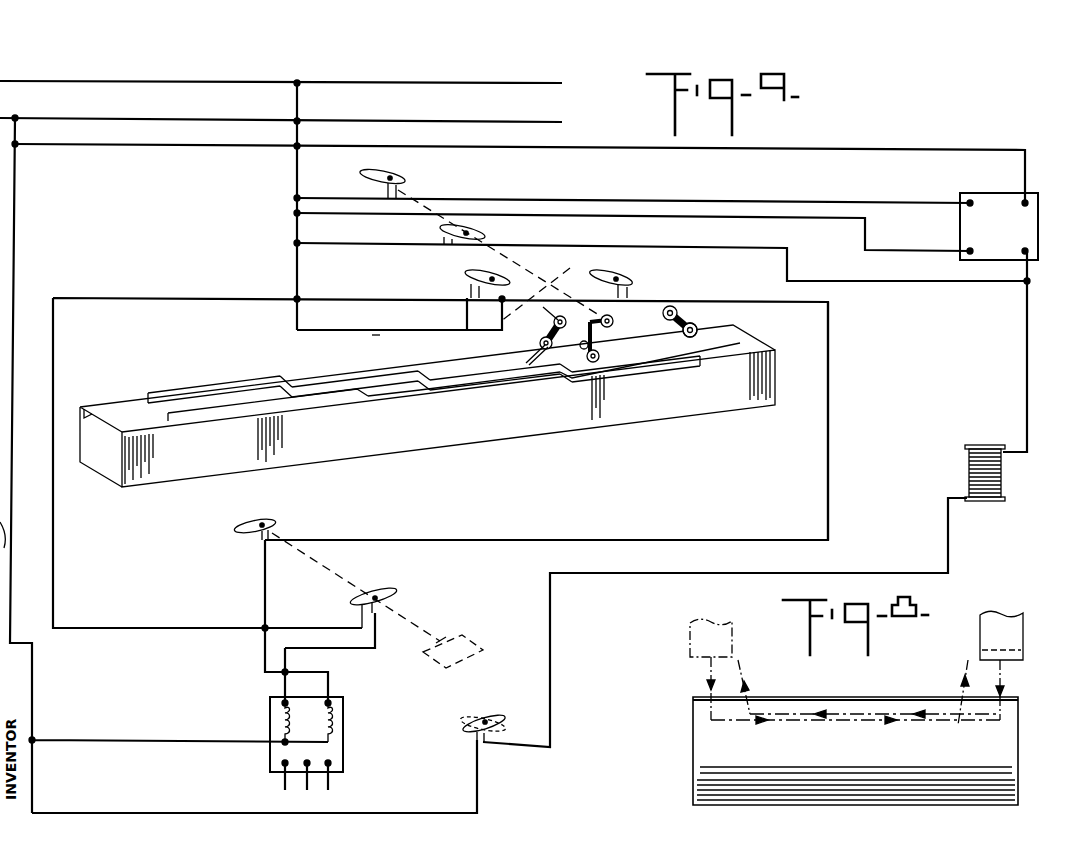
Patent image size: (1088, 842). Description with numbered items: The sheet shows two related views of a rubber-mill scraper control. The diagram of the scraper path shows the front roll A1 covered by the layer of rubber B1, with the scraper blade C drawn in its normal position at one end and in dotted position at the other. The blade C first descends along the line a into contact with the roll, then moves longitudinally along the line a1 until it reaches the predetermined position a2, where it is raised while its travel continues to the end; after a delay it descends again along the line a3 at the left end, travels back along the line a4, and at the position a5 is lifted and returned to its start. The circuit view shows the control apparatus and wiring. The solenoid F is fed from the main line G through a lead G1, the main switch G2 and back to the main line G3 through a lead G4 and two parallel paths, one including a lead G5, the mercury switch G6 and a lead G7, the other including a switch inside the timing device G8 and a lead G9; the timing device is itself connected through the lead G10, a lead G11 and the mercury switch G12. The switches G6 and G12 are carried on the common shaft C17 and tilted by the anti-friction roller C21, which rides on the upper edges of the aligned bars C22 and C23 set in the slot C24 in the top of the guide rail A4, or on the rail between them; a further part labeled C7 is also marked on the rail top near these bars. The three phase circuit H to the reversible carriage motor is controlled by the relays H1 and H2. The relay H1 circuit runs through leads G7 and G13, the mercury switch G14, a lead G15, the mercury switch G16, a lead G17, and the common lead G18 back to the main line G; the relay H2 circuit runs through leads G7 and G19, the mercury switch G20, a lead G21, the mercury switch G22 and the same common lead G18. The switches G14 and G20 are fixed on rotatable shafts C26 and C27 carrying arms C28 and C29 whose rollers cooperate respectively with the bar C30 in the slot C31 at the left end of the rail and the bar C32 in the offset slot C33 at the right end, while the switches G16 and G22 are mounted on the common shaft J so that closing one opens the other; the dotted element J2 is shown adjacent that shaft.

In FIG. 9, the main line G3 is at (136, 83).
In FIG. 9, the main line G is at (136, 121).
In FIG. 9, the lead G10 is at (838, 148).
In FIG. 9, the lead G7 is at (294, 176).
In FIG. 9, the lead G11 is at (570, 195).
In FIG. 9, the lead G9 is at (610, 220).
In FIG. 9, the lead G5 is at (716, 230).
In FIG. 9, the lead G4 is at (1022, 350).
In FIG. 9, the timing device G8 is at (1040, 224).
In FIG. 9, the lead G21 is at (180, 286).
In FIG. 9, the lead G15 is at (830, 406).
In FIG. 9, the lead G19 is at (399, 314).
In FIG. 9, the common lead G18 is at (136, 728).
In FIG. 9, the lead G1 is at (144, 822).
In FIG. 9, the lead G17 is at (264, 572).
In FIG. 9, the solenoid F is at (966, 465).
In FIG. 9, the tiltable mercury switch G12 is at (398, 178).
In FIG. 9, the tiltable mercury switch G6 is at (440, 233).
In FIG. 9, the mercury switch G20 is at (465, 278).
In FIG. 9, the mercury switch G14 is at (636, 280).
In FIG. 9, the mercury switch G16 is at (262, 515).
In FIG. 9, the mercury switch G22 is at (392, 590).
In FIG. 9, the main switch G2 is at (492, 718).
In FIG. 9, the lead G13 is at (546, 286).
In FIG. 9, the common shaft C17 is at (517, 262).
In FIG. 9, the common shaft J is at (410, 616).
In FIG. 9, the latch J2 is at (482, 652).
In FIG. 9, the three phase circuit H is at (343, 775).
In FIG. 9, the relay H2 is at (282, 728).
In FIG. 9, the relay H1 is at (342, 728).
In FIG. 9, the guide rail A4 is at (404, 444).
In FIG. 9, the bar C30 is at (155, 394).
In FIG. 9, the slot C31 is at (300, 380).
In FIG. 9, the slot C33 is at (445, 372).
In FIG. 9, the rotatable shaft C27 is at (593, 358).
In FIG. 9, the carriage part C7 is at (380, 335).
In FIG. 9, the bar C23 is at (204, 420).
In FIG. 9, the slot C24 is at (410, 396).
In FIG. 9, the bar C22 is at (540, 372).
In FIG. 9, the bar C32 is at (660, 343).
In FIG. 9, the arm C29 is at (555, 322).
In FIG. 9, the anti-friction roller C21 is at (596, 336).
In FIG. 9, the rotatable shaft C26 is at (672, 308).
In FIG. 9, the arm C28 is at (696, 324).
In FIG. 8, the front roll A1 is at (693, 718).
In FIG. 8, the layer of rubber B1 is at (700, 748).
In FIG. 8, the scraper blade C is at (690, 632).
In FIG. 8, the line a3 is at (708, 686).
In FIG. 8, the line a is at (1018, 700).
In FIG. 8, the predetermined position a2 is at (752, 712).
In FIG. 8, the position a5 is at (958, 728).
In FIG. 8, the line a1 is at (843, 713).
In FIG. 8, the line a4 is at (780, 722).